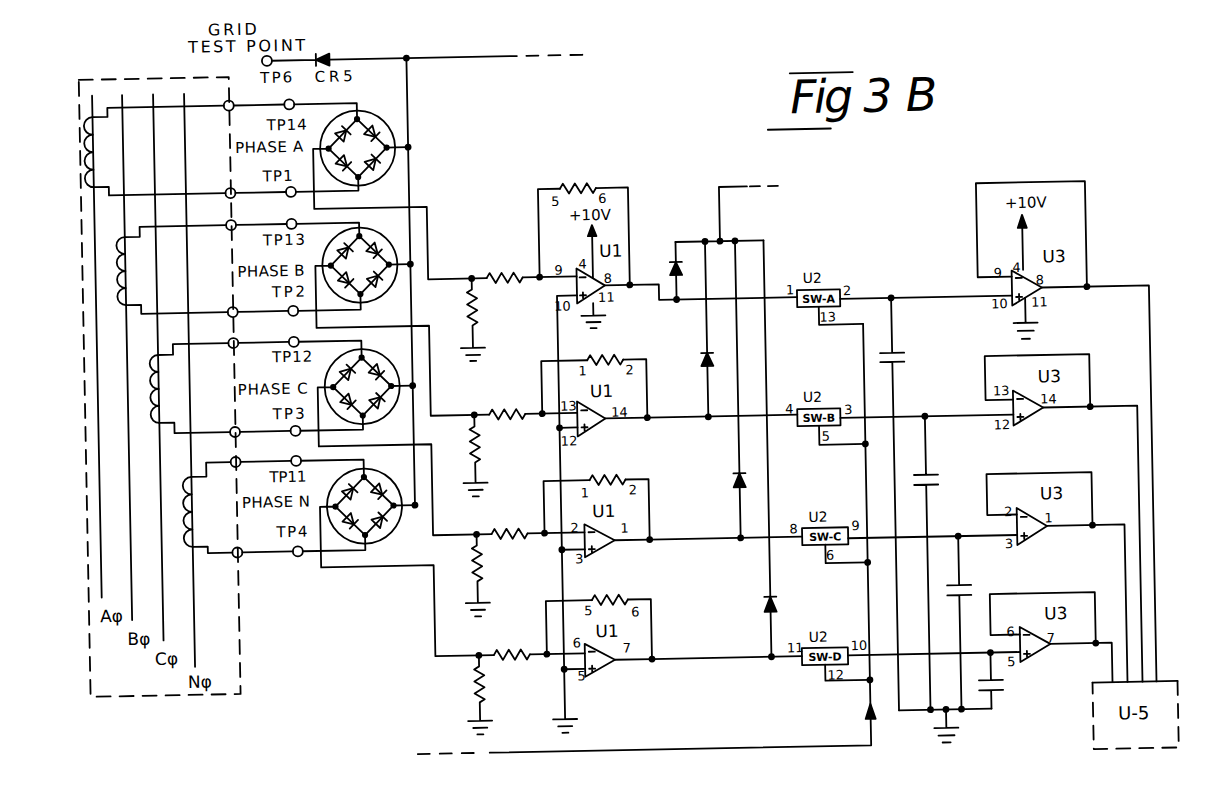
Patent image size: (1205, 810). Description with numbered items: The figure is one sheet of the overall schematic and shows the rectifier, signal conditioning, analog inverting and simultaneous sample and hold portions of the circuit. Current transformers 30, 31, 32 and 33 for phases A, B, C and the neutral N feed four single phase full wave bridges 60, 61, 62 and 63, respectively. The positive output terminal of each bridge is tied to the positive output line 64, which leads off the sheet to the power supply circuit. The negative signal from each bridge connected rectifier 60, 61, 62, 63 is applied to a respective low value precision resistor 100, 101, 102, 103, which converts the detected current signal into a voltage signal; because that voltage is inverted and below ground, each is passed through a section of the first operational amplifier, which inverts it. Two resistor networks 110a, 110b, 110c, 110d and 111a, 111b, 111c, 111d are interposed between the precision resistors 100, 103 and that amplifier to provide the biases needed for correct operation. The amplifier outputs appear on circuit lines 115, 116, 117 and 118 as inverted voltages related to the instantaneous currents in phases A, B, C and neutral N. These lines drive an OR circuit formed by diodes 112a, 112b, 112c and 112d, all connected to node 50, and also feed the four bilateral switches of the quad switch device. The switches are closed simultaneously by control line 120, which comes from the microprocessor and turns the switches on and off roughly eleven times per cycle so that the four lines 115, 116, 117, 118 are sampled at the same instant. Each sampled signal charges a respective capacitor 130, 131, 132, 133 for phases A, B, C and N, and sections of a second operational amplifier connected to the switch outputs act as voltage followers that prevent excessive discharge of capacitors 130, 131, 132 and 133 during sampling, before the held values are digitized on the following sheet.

The current transformer 30 is at (118, 145).
The current transformer 31 is at (148, 269).
The current transformer 32 is at (182, 386).
The current transformer 33 is at (225, 508).
The node 50 is at (732, 243).
The single phase full wave bridge 60 is at (357, 136).
The single phase full wave bridge 61 is at (359, 257).
The single phase full wave bridge 62 is at (364, 377).
The single phase full wave bridge 63 is at (367, 497).
The positive output line 64 is at (459, 58).
The precision resistor 100 is at (458, 319).
The precision resistor 101 is at (472, 439).
The precision resistor 102 is at (472, 559).
The precision resistor 103 is at (472, 702).
The resistor network 110a is at (524, 261).
The resistor network 110b is at (530, 401).
The resistor network 110c is at (534, 517).
The resistor network 110d is at (536, 635).
The resistor network 111a is at (575, 181).
The resistor network 111b is at (593, 348).
The resistor network 111c is at (599, 467).
The resistor network 111d is at (601, 589).
The diode 112a is at (666, 254).
The diode 112b is at (701, 368).
The diode 112c is at (728, 482).
The diode 112d is at (759, 607).
The circuit line 115 is at (694, 304).
The circuit line 116 is at (672, 422).
The circuit line 117 is at (681, 543).
The circuit line 118 is at (763, 663).
The control line 120 is at (731, 744).
The capacitor 130 is at (906, 368).
The capacitor 131 is at (949, 489).
The capacitor 132 is at (967, 601).
The capacitor 133 is at (998, 699).